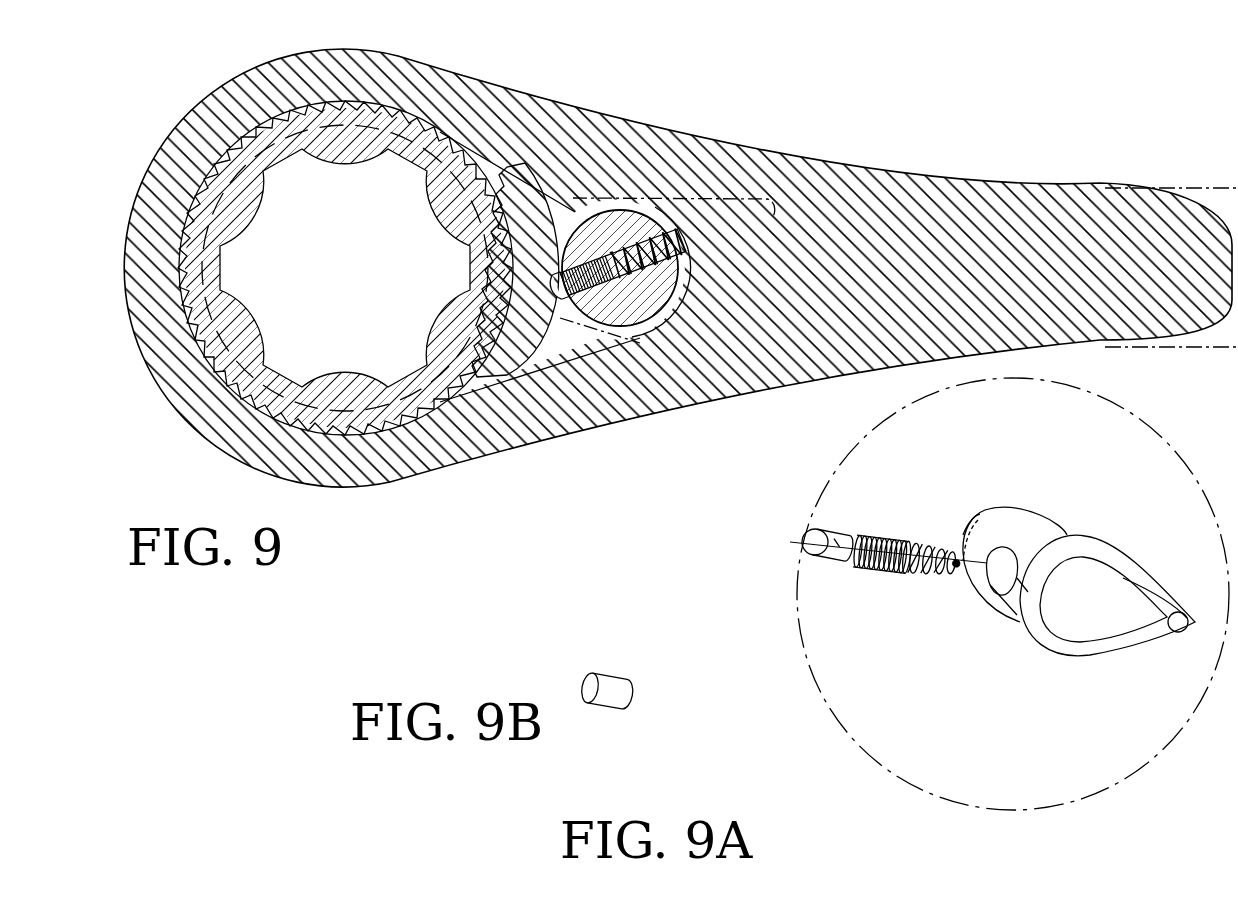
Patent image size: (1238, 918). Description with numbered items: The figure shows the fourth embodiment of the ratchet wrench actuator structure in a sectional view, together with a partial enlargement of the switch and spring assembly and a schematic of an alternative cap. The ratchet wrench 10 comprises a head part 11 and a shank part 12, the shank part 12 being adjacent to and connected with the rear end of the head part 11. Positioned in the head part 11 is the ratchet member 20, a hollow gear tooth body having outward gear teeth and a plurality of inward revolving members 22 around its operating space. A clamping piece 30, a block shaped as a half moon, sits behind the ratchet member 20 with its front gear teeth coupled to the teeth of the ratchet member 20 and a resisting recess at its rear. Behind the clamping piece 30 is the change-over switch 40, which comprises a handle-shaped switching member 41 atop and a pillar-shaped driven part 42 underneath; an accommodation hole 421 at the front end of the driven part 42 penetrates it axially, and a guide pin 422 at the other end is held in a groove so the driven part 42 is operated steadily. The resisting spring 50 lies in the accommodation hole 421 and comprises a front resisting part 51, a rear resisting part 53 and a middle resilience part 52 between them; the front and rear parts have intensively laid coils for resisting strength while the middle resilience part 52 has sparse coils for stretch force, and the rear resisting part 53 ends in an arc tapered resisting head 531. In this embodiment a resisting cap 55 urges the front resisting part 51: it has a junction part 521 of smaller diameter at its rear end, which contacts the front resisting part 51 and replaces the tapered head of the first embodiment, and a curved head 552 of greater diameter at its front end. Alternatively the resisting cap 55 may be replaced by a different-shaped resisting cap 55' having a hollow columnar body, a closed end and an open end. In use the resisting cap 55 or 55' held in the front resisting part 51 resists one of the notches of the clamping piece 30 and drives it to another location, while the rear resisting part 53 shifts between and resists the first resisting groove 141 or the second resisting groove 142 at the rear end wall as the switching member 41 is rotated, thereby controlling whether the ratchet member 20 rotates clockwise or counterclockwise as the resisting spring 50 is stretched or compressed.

In FIG. 9, the ratchet wrench 10 is at (571, 87).
In FIG. 9, the head part 11 is at (185, 148).
In FIG. 9, the shank part 12 is at (1180, 295).
In FIG. 9, the first resisting groove 141 is at (680, 245).
In FIG. 9, the second resisting groove 142 is at (690, 300).
In FIG. 9, the ratchet member 20 is at (345, 229).
In FIG. 9, the inward revolving members 22 is at (406, 170).
In FIG. 9, the clamping piece 30 is at (533, 178).
In FIG. 9A, the change-over switch 40 is at (1079, 566).
In FIG. 9A, the switching member 41 is at (1098, 605).
In FIG. 9, the driven part 42 is at (614, 227).
In FIG. 9A, the driven part 42 is at (1037, 535).
In FIG. 9A, the accommodation hole 421 is at (1002, 582).
In FIG. 9A, the guide pin 422 is at (985, 525).
In FIG. 9, the resisting spring 50 is at (618, 393).
In FIG. 9A, the resisting spring 50 is at (830, 623).
In FIG. 9, the front resisting part 51 is at (586, 300).
In FIG. 9A, the front resisting part 51 is at (905, 572).
In FIG. 9, the middle resilience part 52 is at (622, 290).
In FIG. 9A, the middle resilience part 52 is at (922, 575).
In FIG. 9A, the junction part 521 is at (872, 568).
In FIG. 9, the rear resisting part 53 is at (660, 268).
In FIG. 9A, the rear resisting part 53 is at (950, 578).
In FIG. 9, the arc tapered resisting head 531 is at (718, 290).
In FIG. 9A, the arc tapered resisting head 531 is at (985, 580).
In FIG. 9, the resisting cap 55 is at (548, 399).
In FIG. 9A, the resisting cap 55 is at (810, 505).
In FIG. 9, the curved head 552 is at (541, 262).
In FIG. 9A, the curved head 552 is at (833, 552).
In FIG. 9B, the resisting cap 55' is at (552, 659).